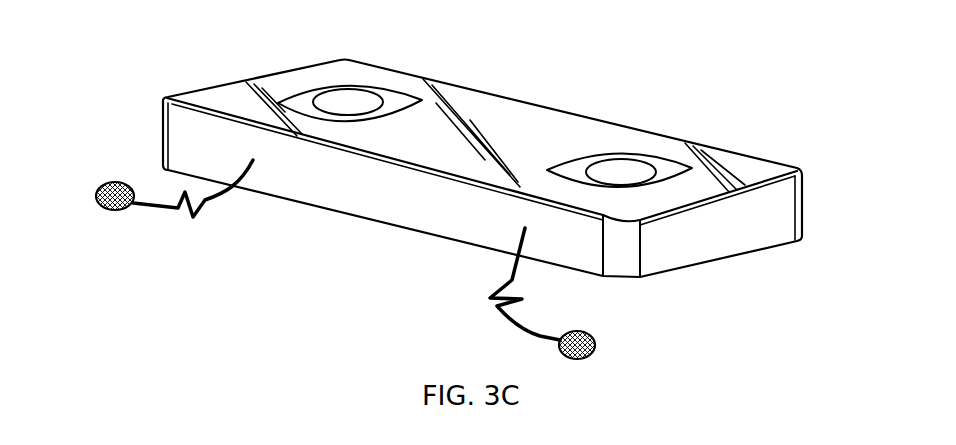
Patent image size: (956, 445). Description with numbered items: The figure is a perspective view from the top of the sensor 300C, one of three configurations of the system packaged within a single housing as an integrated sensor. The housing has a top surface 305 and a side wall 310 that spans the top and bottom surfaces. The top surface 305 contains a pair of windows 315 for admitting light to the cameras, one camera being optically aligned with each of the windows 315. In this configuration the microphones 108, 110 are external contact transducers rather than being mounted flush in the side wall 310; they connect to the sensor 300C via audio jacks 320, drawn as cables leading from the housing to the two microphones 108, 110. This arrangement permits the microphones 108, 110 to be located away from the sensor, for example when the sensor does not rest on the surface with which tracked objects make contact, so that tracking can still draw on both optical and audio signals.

The sensor 300C is at (595, 74).
The top surface 305 is at (748, 170).
The side wall 310 is at (740, 235).
The windows 315 is at (351, 100).
The audio jacks 320 is at (256, 162).
The microphone 108 is at (105, 212).
The microphone 110 is at (595, 347).